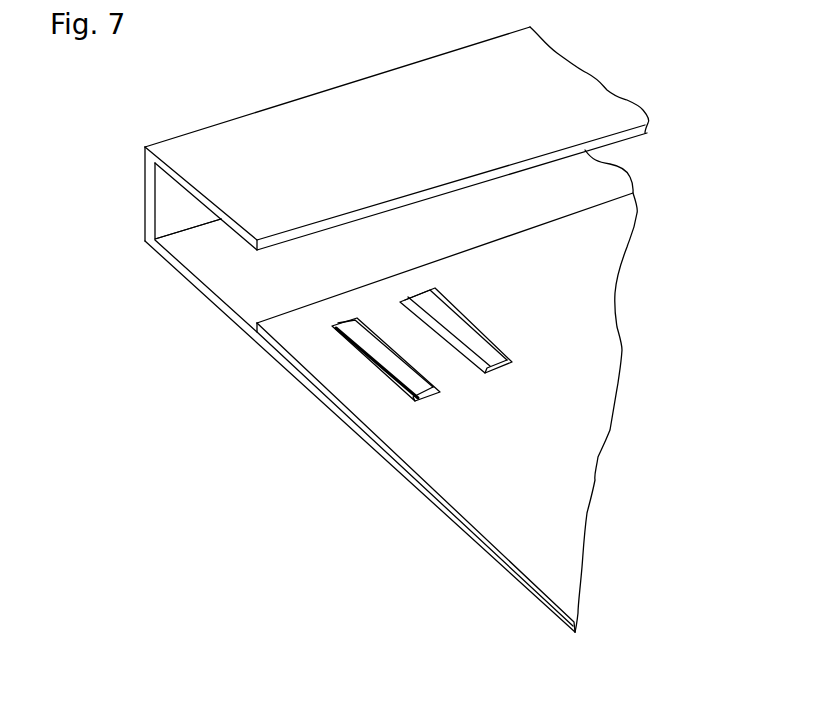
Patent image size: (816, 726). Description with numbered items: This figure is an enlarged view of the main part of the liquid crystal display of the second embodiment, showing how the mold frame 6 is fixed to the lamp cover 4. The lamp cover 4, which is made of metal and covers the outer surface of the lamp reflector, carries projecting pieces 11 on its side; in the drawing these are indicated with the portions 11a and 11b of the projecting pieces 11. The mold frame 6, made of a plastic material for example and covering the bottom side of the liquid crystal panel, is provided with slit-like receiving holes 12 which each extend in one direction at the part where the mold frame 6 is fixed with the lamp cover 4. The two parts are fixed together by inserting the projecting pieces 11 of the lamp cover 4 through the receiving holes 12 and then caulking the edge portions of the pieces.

The lamp cover 4 is at (245, 138).
The mold frame 6 is at (518, 495).
The projecting pieces 11 is at (346, 425).
The flange portion 11a is at (327, 327).
The wall portion 11b is at (415, 295).
The slit-like receiving hole 12 is at (483, 380).